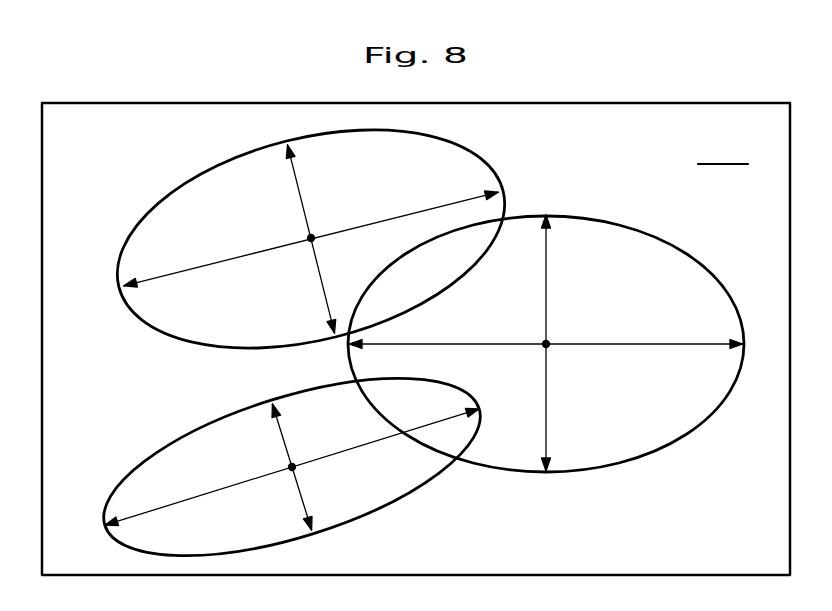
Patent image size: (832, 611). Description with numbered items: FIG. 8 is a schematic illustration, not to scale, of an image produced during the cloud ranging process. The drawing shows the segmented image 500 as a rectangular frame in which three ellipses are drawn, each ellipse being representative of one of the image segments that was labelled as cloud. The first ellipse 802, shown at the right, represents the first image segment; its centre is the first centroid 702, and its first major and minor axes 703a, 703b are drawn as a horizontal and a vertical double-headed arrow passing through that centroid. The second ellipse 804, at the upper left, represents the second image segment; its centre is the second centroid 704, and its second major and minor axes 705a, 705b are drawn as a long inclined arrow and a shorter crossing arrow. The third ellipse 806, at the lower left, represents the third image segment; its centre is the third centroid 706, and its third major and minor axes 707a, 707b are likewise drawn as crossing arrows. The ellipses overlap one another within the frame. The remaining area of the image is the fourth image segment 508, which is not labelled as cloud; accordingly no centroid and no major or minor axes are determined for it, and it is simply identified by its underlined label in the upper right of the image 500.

The segmented image 500 is at (722, 102).
The fourth image segment 508 is at (723, 151).
The first ellipse 802 is at (662, 450).
The first centroid 702 is at (548, 343).
The first major axis 703a is at (632, 348).
The first minor axis 703b is at (547, 302).
The second ellipse 804 is at (142, 212).
The second centroid 704 is at (312, 236).
The second major axis 705a is at (248, 255).
The second minor axis 705b is at (302, 203).
The third ellipse 806 is at (122, 478).
The third centroid 706 is at (293, 468).
The third major axis 707a is at (205, 492).
The third minor axis 707b is at (287, 447).